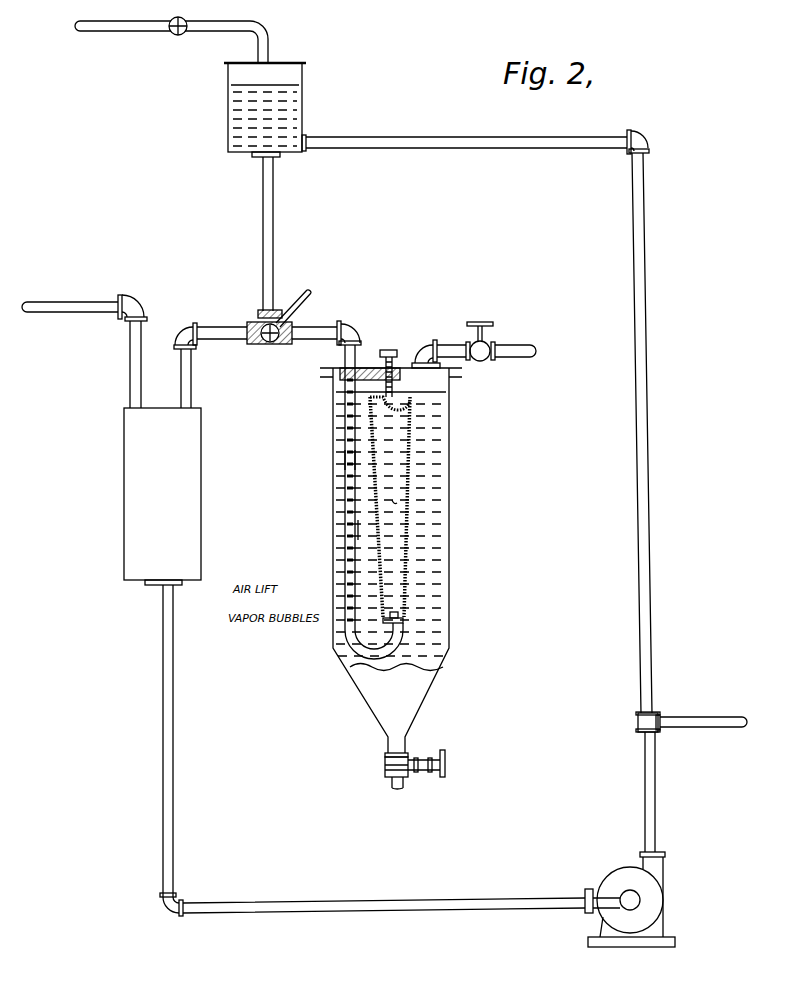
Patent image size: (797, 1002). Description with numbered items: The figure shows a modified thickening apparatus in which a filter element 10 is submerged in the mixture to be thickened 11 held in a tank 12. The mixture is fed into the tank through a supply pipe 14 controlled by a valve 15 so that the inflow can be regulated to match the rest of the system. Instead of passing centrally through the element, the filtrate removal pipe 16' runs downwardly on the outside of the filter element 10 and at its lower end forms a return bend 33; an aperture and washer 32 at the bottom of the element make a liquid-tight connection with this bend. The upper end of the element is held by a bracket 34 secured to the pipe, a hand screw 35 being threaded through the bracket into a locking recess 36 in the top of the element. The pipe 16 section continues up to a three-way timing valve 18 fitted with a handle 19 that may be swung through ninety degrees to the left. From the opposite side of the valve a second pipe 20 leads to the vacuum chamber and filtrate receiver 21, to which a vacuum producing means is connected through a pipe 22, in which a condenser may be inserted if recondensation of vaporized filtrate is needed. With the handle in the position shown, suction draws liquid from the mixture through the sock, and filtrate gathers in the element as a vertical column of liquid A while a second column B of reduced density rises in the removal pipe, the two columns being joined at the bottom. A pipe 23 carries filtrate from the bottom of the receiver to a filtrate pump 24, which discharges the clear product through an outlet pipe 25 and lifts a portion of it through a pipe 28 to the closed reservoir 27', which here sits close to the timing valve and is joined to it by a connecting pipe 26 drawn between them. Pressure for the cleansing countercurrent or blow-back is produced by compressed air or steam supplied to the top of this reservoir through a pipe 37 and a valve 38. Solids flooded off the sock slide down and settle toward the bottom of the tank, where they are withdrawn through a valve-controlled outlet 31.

The filter element 10 is at (413, 454).
The mixture to be thickened 11 is at (433, 491).
The tank 12 is at (452, 539).
The supply pipe 14 is at (520, 352).
The valve 15 is at (483, 341).
The pipe 16 is at (326, 475).
The filtrate removal pipe 16' is at (309, 462).
The 3-way timing valve 18 is at (257, 322).
The handle 19 is at (310, 288).
The second pipe 20 is at (208, 333).
The vacuum chamber and filtrate receiver 21 is at (130, 488).
The pipe 22 is at (78, 306).
The pipe 23 is at (167, 702).
The filtrate pump 24 is at (617, 878).
The outlet pipe 25 is at (707, 726).
The feed pipe 26 is at (273, 212).
The reservoir 27' is at (291, 110).
The pipe 28 is at (653, 337).
The valve-controlled outlet 31 is at (387, 766).
The aperture and washer 32 is at (402, 620).
The return bend 33 is at (393, 636).
The bracket 34 is at (370, 368).
The hand screw 35 is at (398, 352).
The recess 36 is at (412, 409).
The pipe 37 is at (135, 31).
The valve 38 is at (179, 37).
The column of liquid A is at (397, 502).
The second column B is at (351, 516).